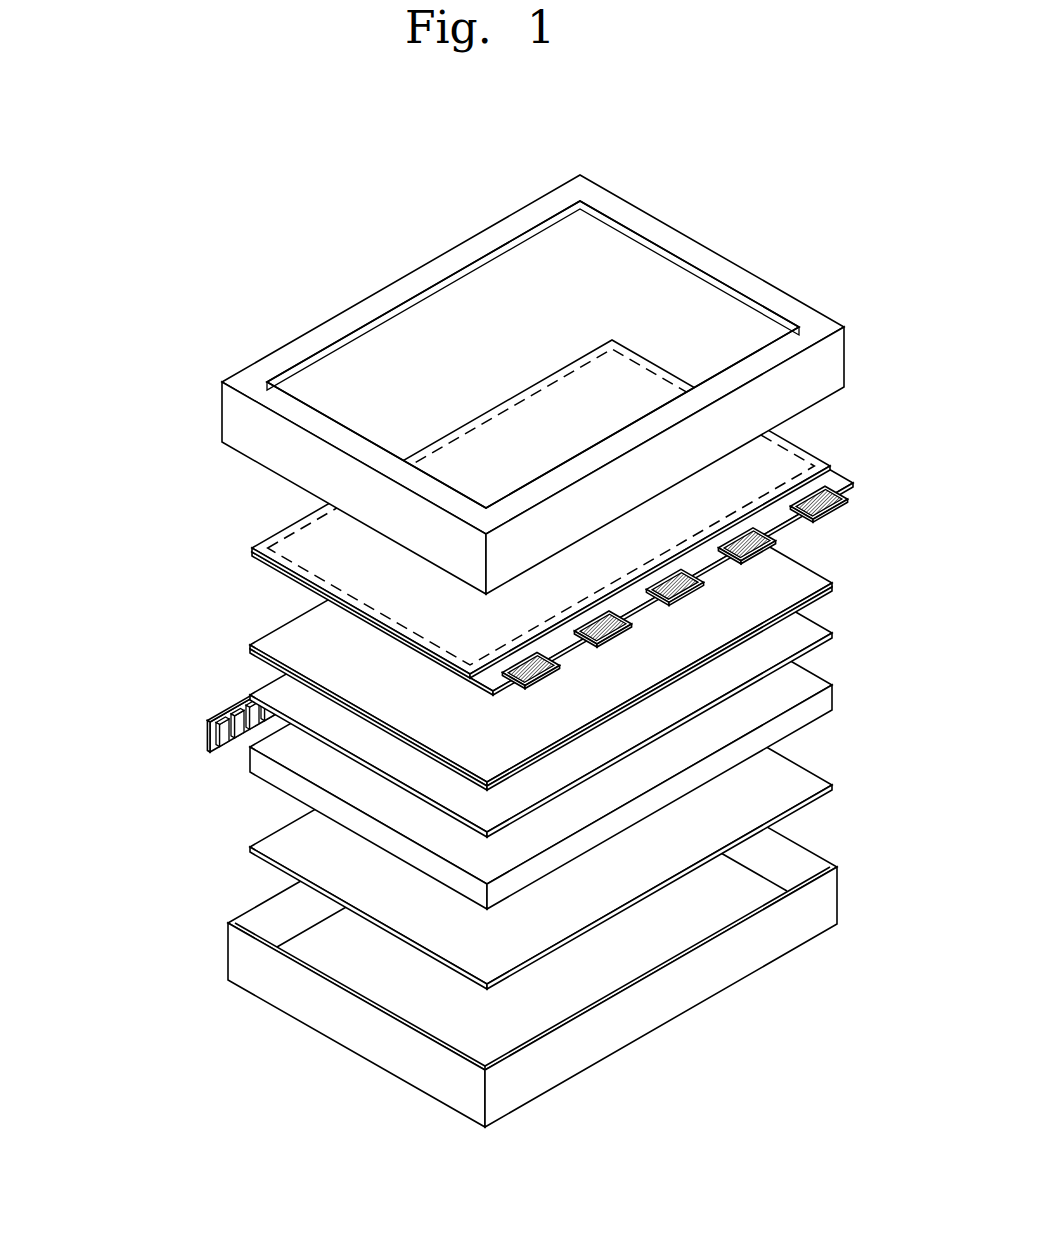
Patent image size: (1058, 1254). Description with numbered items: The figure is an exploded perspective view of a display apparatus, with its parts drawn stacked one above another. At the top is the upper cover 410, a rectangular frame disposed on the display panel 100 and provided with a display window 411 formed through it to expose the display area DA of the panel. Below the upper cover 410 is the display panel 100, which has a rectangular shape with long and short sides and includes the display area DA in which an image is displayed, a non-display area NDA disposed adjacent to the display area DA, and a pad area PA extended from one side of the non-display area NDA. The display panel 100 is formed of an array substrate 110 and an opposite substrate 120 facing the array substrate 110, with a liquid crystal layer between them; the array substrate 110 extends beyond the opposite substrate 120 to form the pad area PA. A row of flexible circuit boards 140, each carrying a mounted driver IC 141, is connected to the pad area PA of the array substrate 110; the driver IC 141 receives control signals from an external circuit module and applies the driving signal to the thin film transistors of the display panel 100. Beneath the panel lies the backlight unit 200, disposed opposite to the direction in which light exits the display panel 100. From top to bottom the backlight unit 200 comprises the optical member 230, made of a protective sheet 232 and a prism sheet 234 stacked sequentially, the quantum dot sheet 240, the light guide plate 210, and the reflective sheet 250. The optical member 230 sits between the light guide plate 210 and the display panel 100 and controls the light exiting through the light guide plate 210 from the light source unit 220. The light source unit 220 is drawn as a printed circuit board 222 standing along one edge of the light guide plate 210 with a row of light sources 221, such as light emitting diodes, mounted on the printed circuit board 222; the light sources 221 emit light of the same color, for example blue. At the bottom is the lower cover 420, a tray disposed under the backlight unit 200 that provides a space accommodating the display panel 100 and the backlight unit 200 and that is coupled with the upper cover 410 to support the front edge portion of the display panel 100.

The display panel 100 is at (483, 517).
The array substrate 110 is at (506, 519).
The opposite substrate 120 is at (481, 509).
The flexible circuit board 140 is at (705, 587).
The driver IC 141 is at (843, 502).
The backlight unit 200 is at (431, 717).
The light guide plate 210 is at (257, 763).
The light source unit 220 is at (180, 726).
The light sources 221 is at (222, 716).
The printed circuit board 222 is at (209, 742).
The optical member 230 is at (457, 618).
The protective sheet 232 is at (250, 645).
The prism sheet 234 is at (250, 651).
The quantum dot sheet 240 is at (255, 695).
The reflective sheet 250 is at (272, 843).
The upper cover 410 is at (492, 384).
The display window 411 is at (468, 327).
The lower cover 420 is at (216, 953).
The display area DA is at (283, 542).
The non-display area NDA is at (300, 521).
The pad area PA is at (838, 481).